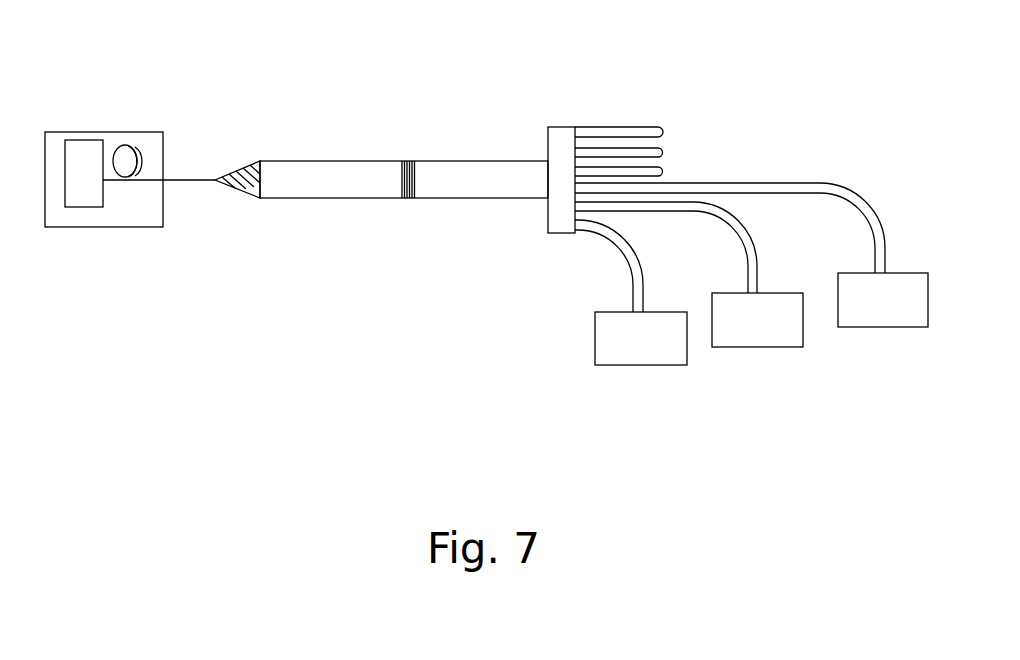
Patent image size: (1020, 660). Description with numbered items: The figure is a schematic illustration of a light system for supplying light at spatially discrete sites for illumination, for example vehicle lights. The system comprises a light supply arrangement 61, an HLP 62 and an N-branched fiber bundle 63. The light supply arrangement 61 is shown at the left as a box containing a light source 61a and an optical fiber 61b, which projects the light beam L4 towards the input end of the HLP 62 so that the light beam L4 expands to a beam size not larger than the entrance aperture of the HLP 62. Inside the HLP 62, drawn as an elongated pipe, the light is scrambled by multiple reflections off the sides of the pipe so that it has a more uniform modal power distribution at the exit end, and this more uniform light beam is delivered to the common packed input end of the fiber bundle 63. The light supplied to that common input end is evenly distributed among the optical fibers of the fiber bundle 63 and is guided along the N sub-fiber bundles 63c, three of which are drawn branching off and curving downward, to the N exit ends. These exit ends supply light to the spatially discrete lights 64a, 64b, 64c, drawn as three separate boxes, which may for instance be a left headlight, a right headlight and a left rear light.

The light supply arrangement 61 is at (122, 112).
The light source 61a is at (85, 193).
The optical fiber 61b is at (127, 177).
The light beam L4 is at (247, 206).
The HLP 62 is at (315, 149).
The N-branched fiber bundle 63 is at (558, 97).
The sub-fiber bundles 63c is at (712, 181).
The light 64a is at (642, 328).
The light 64b is at (758, 314).
The light 64c is at (888, 303).